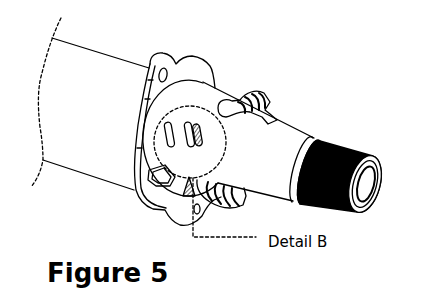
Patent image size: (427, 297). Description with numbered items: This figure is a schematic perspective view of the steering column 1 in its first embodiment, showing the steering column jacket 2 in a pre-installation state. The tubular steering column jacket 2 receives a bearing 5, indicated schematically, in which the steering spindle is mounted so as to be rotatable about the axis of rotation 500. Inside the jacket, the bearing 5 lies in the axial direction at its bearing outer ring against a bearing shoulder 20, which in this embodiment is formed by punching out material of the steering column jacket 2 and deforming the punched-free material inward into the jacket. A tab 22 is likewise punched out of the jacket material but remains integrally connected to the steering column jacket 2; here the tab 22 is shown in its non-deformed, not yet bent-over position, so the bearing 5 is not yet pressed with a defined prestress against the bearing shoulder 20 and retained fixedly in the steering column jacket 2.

The steering column 1 is at (282, 55).
The steering column jacket 2 is at (110, 78).
The bearing 5 is at (259, 98).
The bearing shoulder 20 is at (149, 163).
The tab 22 is at (199, 127).
The axis of rotation 500 is at (410, 199).